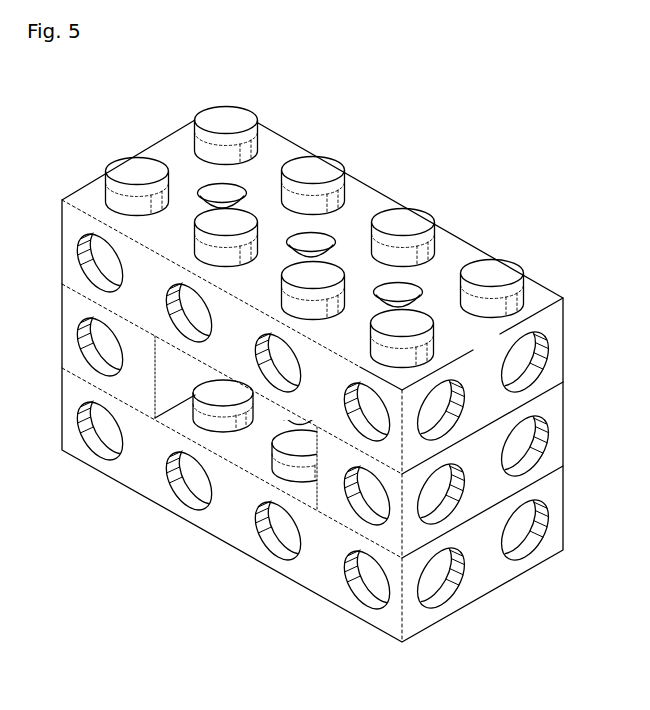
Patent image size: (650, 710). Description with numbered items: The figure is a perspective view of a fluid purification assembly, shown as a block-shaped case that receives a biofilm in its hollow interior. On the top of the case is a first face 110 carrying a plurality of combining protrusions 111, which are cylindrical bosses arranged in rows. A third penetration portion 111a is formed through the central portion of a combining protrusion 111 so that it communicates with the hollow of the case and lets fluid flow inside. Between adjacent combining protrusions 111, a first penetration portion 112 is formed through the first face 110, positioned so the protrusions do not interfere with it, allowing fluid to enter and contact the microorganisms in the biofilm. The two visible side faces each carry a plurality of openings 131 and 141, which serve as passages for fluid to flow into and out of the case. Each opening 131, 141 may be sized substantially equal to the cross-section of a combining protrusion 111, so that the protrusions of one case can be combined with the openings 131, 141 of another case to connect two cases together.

The first face 110 is at (362, 212).
The combining protrusion 111 is at (402, 228).
The third penetration portion 111a is at (217, 393).
The first penetration portion 112 is at (220, 200).
The opening 131 is at (200, 485).
The opening 141 is at (435, 582).